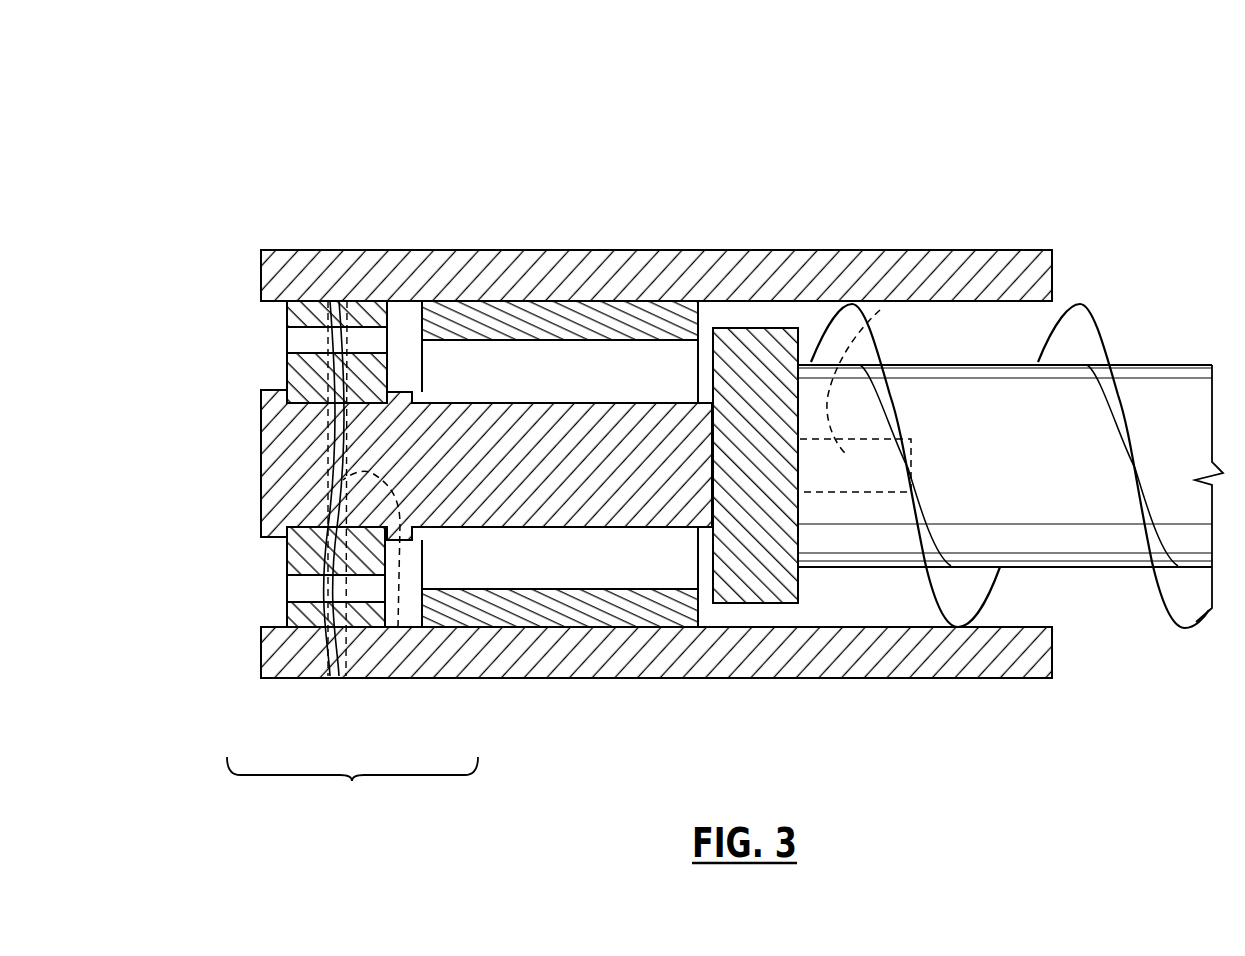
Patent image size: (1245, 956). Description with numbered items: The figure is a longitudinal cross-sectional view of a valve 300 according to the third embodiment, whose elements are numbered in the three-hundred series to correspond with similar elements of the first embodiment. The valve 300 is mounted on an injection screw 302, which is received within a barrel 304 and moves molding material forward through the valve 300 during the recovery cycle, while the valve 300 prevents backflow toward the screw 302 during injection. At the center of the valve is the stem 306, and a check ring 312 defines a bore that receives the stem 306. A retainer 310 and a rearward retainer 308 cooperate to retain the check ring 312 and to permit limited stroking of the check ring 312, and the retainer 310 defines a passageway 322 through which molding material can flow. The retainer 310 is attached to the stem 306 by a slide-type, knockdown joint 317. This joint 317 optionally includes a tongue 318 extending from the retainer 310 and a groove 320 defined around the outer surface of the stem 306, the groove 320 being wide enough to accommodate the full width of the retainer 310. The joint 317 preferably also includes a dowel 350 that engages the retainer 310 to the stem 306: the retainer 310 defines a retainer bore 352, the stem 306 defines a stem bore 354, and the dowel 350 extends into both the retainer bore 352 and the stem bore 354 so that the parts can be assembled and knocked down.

The valve 300 is at (757, 136).
The injection screw 302 is at (1042, 417).
The barrel 304 is at (908, 252).
The stem 306 is at (547, 488).
The rearward retainer 308 is at (757, 353).
The retainer 310 is at (316, 312).
The check ring 312 is at (620, 326).
The slide-type joint 317 is at (375, 820).
The tongue 318 is at (302, 579).
The groove 320 is at (333, 566).
The passageway 322 is at (293, 340).
The dowel 350 is at (338, 650).
The retainer bore 352 is at (344, 550).
The stem bore 354 is at (398, 627).